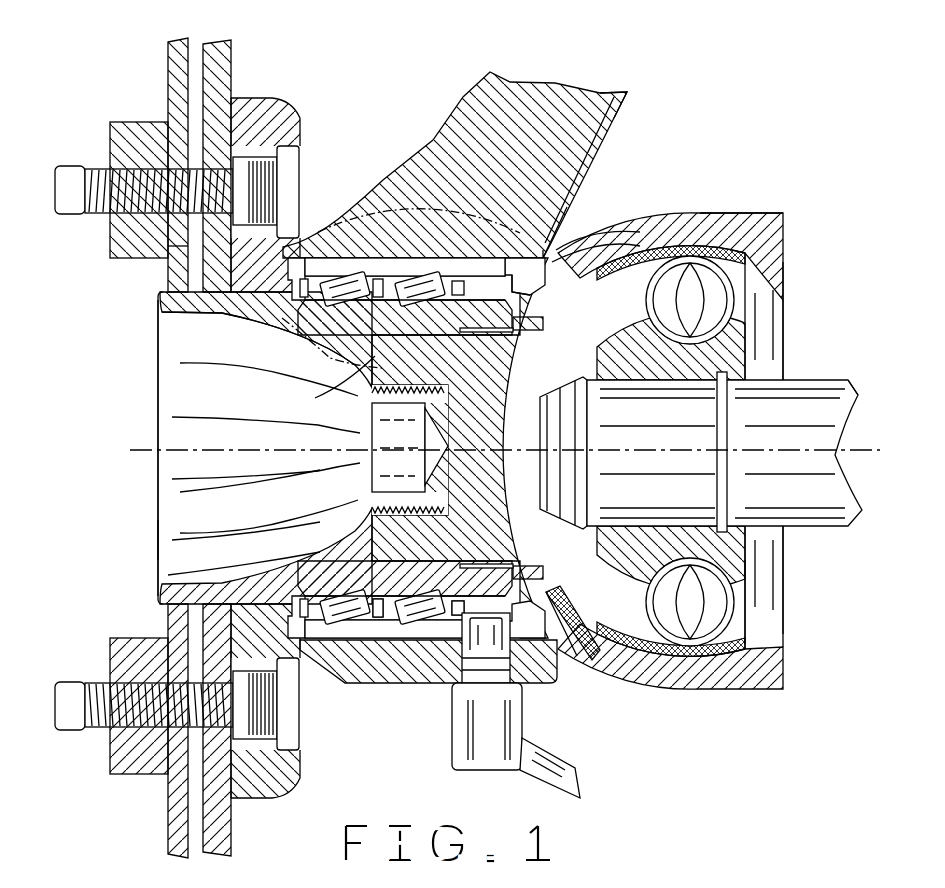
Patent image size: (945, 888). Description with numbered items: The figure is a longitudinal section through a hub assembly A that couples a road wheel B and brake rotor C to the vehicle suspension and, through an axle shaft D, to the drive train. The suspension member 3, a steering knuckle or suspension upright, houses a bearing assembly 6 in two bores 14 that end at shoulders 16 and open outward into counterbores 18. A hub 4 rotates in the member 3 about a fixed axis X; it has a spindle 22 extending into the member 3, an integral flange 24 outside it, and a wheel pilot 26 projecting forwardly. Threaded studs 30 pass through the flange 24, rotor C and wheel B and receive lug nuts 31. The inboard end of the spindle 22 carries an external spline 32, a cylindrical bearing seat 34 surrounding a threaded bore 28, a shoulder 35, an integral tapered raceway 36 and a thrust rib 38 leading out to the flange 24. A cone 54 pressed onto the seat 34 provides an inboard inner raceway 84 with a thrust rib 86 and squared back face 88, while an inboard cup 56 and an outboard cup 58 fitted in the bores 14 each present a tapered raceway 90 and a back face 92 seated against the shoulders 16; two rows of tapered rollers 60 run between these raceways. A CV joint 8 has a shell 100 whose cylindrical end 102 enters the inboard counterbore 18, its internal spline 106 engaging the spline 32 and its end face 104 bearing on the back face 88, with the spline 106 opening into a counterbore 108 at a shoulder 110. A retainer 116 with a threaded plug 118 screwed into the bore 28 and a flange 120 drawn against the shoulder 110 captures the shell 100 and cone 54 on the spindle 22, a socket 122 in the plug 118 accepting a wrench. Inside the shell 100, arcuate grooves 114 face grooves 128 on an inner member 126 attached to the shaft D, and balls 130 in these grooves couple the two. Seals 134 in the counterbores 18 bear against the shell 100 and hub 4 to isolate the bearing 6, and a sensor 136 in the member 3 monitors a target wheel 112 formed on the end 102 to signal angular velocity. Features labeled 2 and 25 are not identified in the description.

The steering knuckle 2 is at (343, 205).
The suspension member 3 is at (628, 108).
The hub 4 is at (150, 510).
The bearing assembly 6 is at (452, 300).
The CV joint 8 is at (732, 212).
The bores 14 is at (368, 257).
The shoulders 16 is at (420, 246).
The counterbores 18 is at (558, 242).
The spindle 22 is at (315, 398).
The flange 24 is at (125, 640).
The flange face 25 is at (170, 246).
The wheel pilot 26 is at (157, 297).
The threaded bore 28 is at (372, 407).
The threaded studs 30 is at (57, 176).
The lug nuts 31 is at (135, 128).
The external spline 32 is at (562, 262).
The bearing seat 34 is at (312, 378).
The shoulder 35 is at (413, 565).
The tapered raceway 36 is at (338, 604).
The thrust rib 38 is at (312, 598).
The cone 54 is at (545, 330).
The inboard cup 56 is at (455, 618).
The outboard cup 58 is at (355, 640).
The tapered rollers 60 is at (312, 356).
The tapered raceway 84 is at (497, 292).
The thrust rib 86 is at (518, 272).
The back face 88 is at (560, 235).
The tapered raceway 90 is at (414, 617).
The back face 92 is at (390, 640).
The shell 100 is at (757, 214).
The cylindrical end 102 is at (582, 624).
The end face 104 is at (500, 550).
The spline 106 is at (515, 552).
The counterbore 108 is at (566, 326).
The shoulder 110 is at (552, 604).
The target wheel 112 is at (480, 607).
The arcuate grooves 114 is at (765, 292).
The retainer 116 is at (320, 455).
The threaded plug 118 is at (320, 470).
The flange 120 is at (505, 364).
The socket 122 is at (368, 440).
The inner member 126 is at (748, 563).
The arcuate grooves 128 is at (757, 360).
The balls 130 is at (735, 602).
The seals 134 is at (290, 325).
The sensor 136 is at (512, 716).
The hub assembly A is at (128, 545).
The road wheel B is at (166, 62).
The brake rotor C is at (240, 60).
The axle shaft D is at (862, 390).
The axis X is at (509, 450).